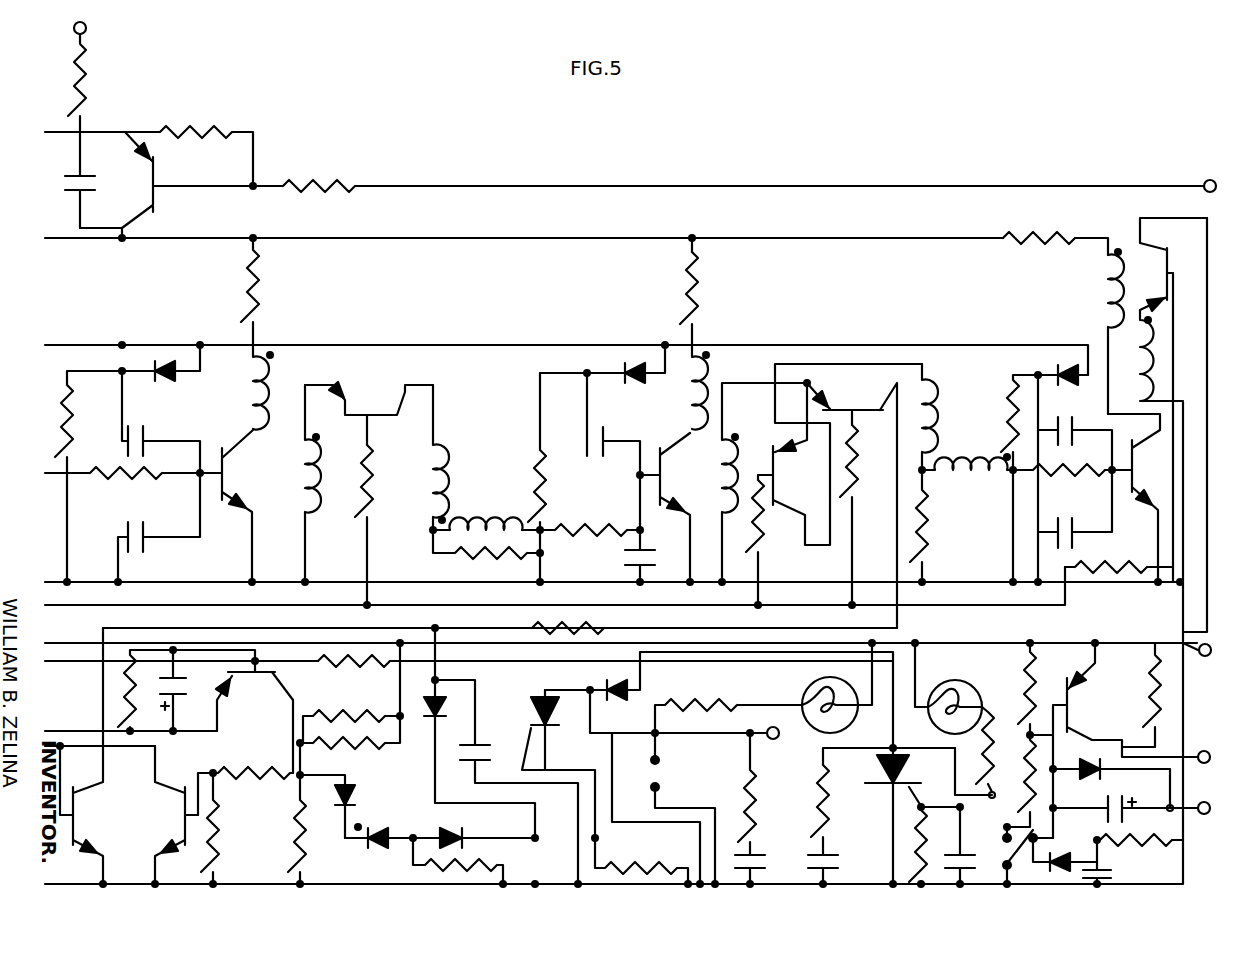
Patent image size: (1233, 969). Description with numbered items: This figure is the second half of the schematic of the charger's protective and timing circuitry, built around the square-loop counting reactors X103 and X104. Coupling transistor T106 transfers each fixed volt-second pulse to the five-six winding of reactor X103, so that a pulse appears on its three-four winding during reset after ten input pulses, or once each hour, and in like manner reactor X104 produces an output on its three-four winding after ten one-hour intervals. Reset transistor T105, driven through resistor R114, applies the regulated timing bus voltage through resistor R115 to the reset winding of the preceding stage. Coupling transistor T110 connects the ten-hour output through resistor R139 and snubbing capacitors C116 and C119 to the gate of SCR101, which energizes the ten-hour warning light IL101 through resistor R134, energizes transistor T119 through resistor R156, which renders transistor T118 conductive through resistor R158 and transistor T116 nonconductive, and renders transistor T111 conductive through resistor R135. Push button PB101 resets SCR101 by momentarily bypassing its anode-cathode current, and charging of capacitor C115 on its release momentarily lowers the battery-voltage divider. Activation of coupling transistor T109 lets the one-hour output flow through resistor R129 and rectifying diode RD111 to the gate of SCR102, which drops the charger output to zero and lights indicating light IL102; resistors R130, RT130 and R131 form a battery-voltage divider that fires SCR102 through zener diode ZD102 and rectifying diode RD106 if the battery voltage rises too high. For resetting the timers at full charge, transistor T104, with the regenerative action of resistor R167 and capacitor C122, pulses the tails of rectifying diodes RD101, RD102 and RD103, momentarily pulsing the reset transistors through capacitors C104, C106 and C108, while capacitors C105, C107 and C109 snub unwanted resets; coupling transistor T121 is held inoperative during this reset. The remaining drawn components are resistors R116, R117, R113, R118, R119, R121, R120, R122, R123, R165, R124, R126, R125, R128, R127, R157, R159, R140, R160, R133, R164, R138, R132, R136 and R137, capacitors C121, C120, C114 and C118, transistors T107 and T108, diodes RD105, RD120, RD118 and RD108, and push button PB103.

The resistor R167 is at (106, 77).
The resistor R116 is at (189, 144).
The transistor T104 is at (144, 185).
The resistor R117 is at (684, 173).
The capacitor C122 is at (49, 180).
The resistor R115 is at (279, 291).
The rectifying diode RD101 is at (159, 378).
The resistor R113 is at (88, 476).
The capacitor C104 is at (161, 422).
The resistor R114 is at (133, 486).
The snubbing capacitor C105 is at (159, 527).
The transistor T105 is at (271, 463).
The coupling transistor T106 is at (369, 388).
The resistor R118 is at (377, 510).
The reactor X103 is at (480, 459).
The resistor R119 is at (488, 556).
The resistor R121 is at (512, 477).
The rectifying diode RD102 is at (602, 380).
The capacitor C106 is at (611, 451).
The resistor R120 is at (592, 520).
The snubbing capacitor C107 is at (607, 556).
The transistor / transformer T107 is at (733, 410).
The resistor R122 is at (719, 288).
The transistor T108 is at (850, 498).
The resistor R123 is at (861, 507).
The coupling transistor T121 is at (847, 454).
The resistor R165 is at (783, 540).
The reactor X104 is at (961, 430).
The resistor R124 is at (945, 526).
The resistor R126 is at (995, 478).
The rectifying diode RD103 is at (1033, 367).
The capacitor C108 is at (1075, 422).
The resistor R125 is at (1072, 481).
The snubbing capacitor C109 is at (1072, 506).
The coupling transistor T109 is at (1137, 498).
The resistor R128 is at (1119, 556).
The resistor R127 is at (1055, 233).
The coupling transistor T110 is at (1148, 316).
The resistor R157 is at (152, 690).
The capacitor C121 is at (183, 692).
The transistor T119 is at (254, 717).
The resistor R158 is at (245, 781).
The transistor T116 is at (100, 756).
The transistor T118 is at (167, 815).
The resistor R159 is at (221, 828).
The resistor R131 is at (286, 811).
The resistor R156 is at (354, 674).
The resistor R130 is at (353, 717).
The resistor RT130 is at (351, 708).
The rectifier diode RD105 is at (352, 806).
The zener diode ZD102 is at (352, 845).
The rectifying diode RD106 is at (474, 828).
The resistor R140 is at (427, 862).
The rectifying diode RD111 is at (471, 733).
The capacitor C120 is at (506, 782).
The silicon controlled rectifier SCR102 is at (545, 757).
The rectifier diode RD120 is at (708, 700).
The resistor R160 is at (696, 707).
The indicating light IL102 is at (809, 688).
The push button PB103 is at (695, 805).
The resistor R133 is at (736, 794).
The capacitor C114 is at (760, 854).
The resistor R164 is at (883, 799).
The capacitor C118 is at (809, 854).
The silicon controlled rectifier SCR101 is at (890, 816).
The resistor R138 is at (907, 843).
The snubbing capacitor C119 is at (948, 843).
The resistor R132 is at (641, 861).
The ten hour warning light IL101 is at (948, 688).
The resistor R134 is at (975, 752).
The resistor R136 is at (1016, 691).
The resistor R135 is at (1016, 781).
The push button PB101 is at (1008, 849).
The transistor T111 is at (1120, 703).
The resistor R137 is at (1139, 695).
The rectifier diode RD118 is at (1129, 786).
The capacitor C115 is at (1109, 815).
The resistor R139 is at (1138, 851).
The rectifier diode RD108 is at (1067, 860).
The snubbing capacitor C116 is at (1124, 877).
The resistor R129 is at (595, 621).